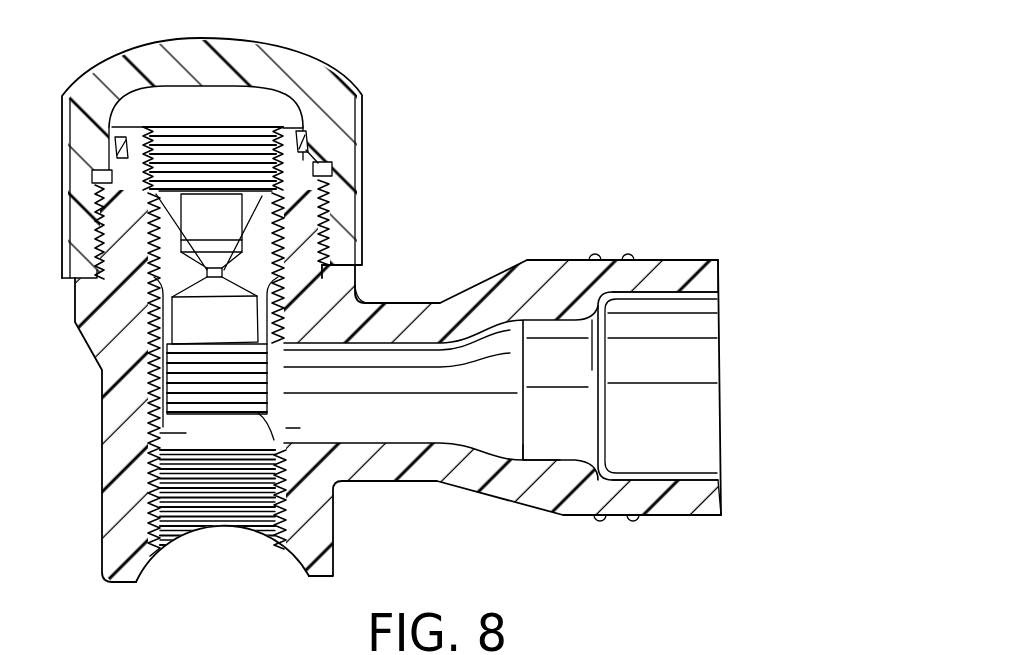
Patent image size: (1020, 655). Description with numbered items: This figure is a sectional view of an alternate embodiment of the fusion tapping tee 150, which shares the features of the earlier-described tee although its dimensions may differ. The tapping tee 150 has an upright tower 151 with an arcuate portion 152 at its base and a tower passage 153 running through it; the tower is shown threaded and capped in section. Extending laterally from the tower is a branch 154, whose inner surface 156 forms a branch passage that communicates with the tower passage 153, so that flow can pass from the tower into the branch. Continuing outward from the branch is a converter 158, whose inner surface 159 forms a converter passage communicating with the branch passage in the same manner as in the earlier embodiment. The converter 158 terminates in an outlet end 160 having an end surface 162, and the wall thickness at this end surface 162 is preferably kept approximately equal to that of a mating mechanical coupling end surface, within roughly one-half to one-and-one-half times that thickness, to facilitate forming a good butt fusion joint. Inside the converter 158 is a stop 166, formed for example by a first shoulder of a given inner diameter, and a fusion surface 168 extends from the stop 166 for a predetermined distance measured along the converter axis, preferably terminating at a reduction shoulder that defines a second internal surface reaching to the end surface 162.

The fusion tapping tee 150 is at (410, 142).
The tower 151 is at (100, 452).
The arcuate portion 152 is at (153, 558).
The tower passage 153 is at (243, 522).
The branch 154 is at (400, 302).
The inner surface 156 is at (303, 430).
The converter 158 is at (660, 206).
The inner surface 159 is at (703, 367).
The outlet end 160 is at (720, 427).
The end surface 162 is at (718, 276).
The stop 166 is at (523, 460).
The fusion surface 168 is at (552, 318).